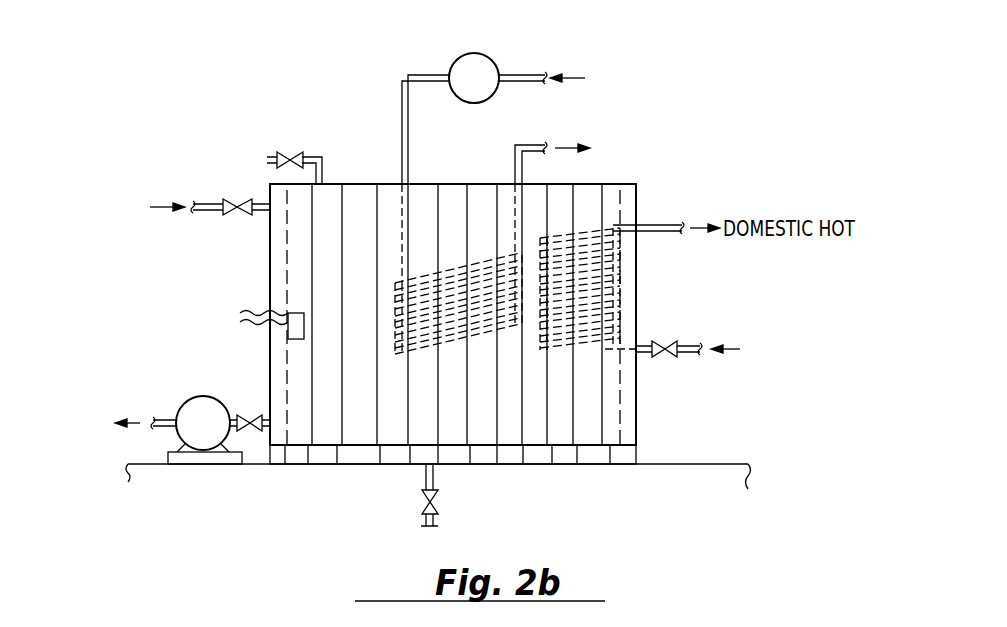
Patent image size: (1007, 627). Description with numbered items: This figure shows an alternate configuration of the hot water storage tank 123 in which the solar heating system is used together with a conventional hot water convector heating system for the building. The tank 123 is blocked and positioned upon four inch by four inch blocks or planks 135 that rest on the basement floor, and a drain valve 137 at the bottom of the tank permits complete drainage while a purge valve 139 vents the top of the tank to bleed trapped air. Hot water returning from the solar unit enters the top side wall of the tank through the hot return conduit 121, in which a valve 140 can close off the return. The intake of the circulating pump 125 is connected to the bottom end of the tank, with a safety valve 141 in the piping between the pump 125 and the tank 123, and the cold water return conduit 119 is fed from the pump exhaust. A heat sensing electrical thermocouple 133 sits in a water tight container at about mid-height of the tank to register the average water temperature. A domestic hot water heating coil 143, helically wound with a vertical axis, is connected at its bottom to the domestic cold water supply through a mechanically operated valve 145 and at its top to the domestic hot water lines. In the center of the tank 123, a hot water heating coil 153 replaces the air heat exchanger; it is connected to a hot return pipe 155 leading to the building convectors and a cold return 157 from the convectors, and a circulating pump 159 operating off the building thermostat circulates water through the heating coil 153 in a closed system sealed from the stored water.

The cold water return conduit 119 is at (153, 418).
The hot return conduit 121 is at (211, 212).
The hot water storage tank 123 is at (637, 394).
The circulating pump 125 is at (201, 401).
The heat sensing electrical thermocouple 133 is at (292, 313).
The blocks or planks 135 is at (515, 457).
The drain valve 137 is at (428, 497).
The purge valve 139 is at (293, 153).
The valve 140 is at (239, 202).
The safety valve 141 is at (257, 415).
The domestic hot water heating coil 143 is at (616, 286).
The mechanically operated valve 145 is at (657, 343).
The hot water heating coil 153 is at (396, 357).
The hot return pipe 155 is at (515, 162).
The cold return 157 is at (404, 104).
The circulating pump 159 is at (487, 62).